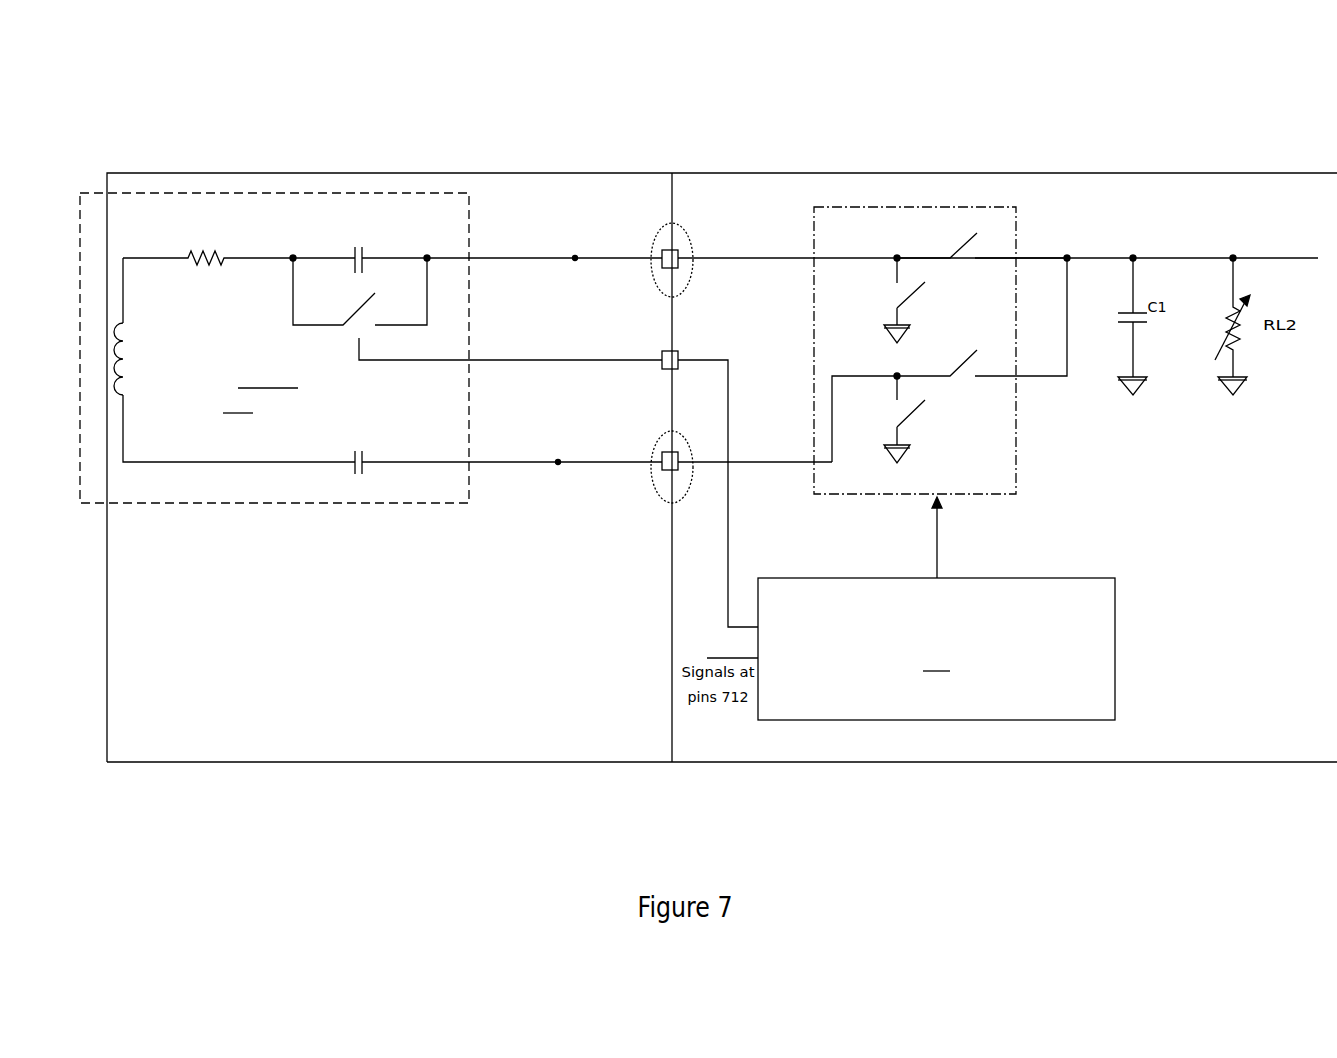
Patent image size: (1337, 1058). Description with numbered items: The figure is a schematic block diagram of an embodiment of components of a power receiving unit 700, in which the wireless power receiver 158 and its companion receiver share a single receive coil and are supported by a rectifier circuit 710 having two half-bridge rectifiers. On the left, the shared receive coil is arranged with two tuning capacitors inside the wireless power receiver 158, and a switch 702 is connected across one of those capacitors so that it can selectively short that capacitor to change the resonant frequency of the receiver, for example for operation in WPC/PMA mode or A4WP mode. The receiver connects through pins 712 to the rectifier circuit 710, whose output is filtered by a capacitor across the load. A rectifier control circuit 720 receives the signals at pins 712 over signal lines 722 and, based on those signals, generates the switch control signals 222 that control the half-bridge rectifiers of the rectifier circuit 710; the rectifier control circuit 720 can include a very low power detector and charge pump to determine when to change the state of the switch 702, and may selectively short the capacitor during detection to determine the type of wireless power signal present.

The wireless power system 700 is at (112, 100).
The wireless power receiver 158 is at (371, 348).
The switch 702 is at (339, 343).
The pins 712 is at (642, 265).
The rectifier circuit 710 is at (942, 350).
The rectifier control circuit 720 is at (936, 649).
The signals at pins 722 is at (733, 527).
The switch control signals 222 is at (945, 527).